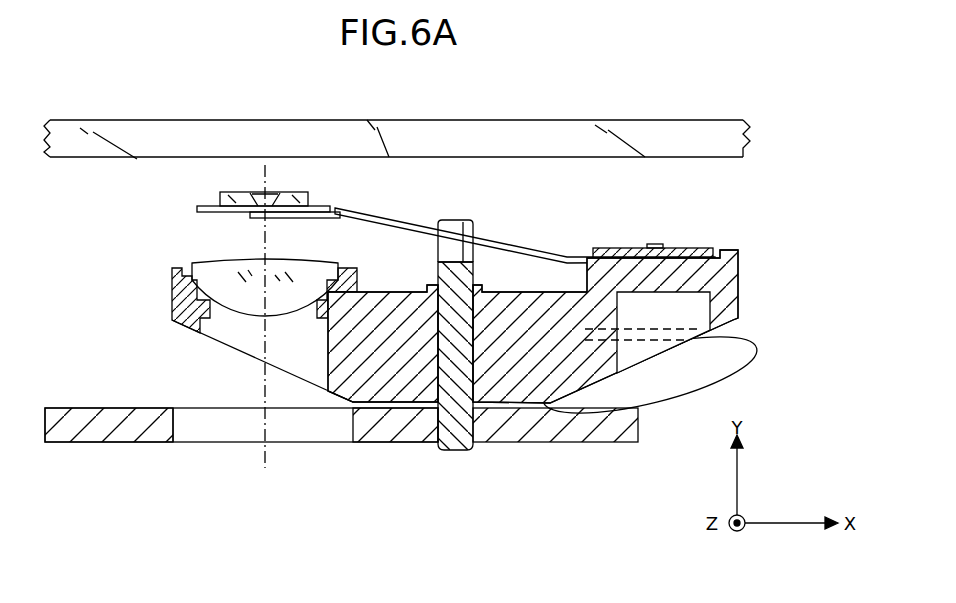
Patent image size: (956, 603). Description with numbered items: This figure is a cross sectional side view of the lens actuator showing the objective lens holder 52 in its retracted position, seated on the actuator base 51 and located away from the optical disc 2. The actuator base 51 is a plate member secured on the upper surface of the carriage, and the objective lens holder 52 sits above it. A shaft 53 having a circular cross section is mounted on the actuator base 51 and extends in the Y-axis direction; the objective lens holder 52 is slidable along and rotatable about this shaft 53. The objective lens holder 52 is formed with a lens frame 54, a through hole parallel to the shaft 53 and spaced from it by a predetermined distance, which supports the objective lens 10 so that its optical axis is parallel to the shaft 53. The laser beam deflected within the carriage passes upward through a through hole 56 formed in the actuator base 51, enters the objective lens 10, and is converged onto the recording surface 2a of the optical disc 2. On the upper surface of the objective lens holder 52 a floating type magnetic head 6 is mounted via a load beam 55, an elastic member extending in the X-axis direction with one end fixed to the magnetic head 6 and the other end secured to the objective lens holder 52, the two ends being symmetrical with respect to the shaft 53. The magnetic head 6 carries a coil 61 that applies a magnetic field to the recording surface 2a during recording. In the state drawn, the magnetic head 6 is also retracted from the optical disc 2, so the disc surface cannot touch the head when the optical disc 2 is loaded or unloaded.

The optical disc 2 is at (508, 130).
The recording surface 2a is at (695, 158).
The floating type magnetic head 6 is at (190, 190).
The objective lens 10 is at (224, 268).
The actuator base 51 is at (104, 418).
The objective lens holder 52 is at (565, 373).
The shaft 53 is at (458, 446).
The lens frame 54 is at (208, 328).
The load beam 55 is at (520, 243).
The through hole 56 is at (175, 428).
The coil 61 is at (292, 192).